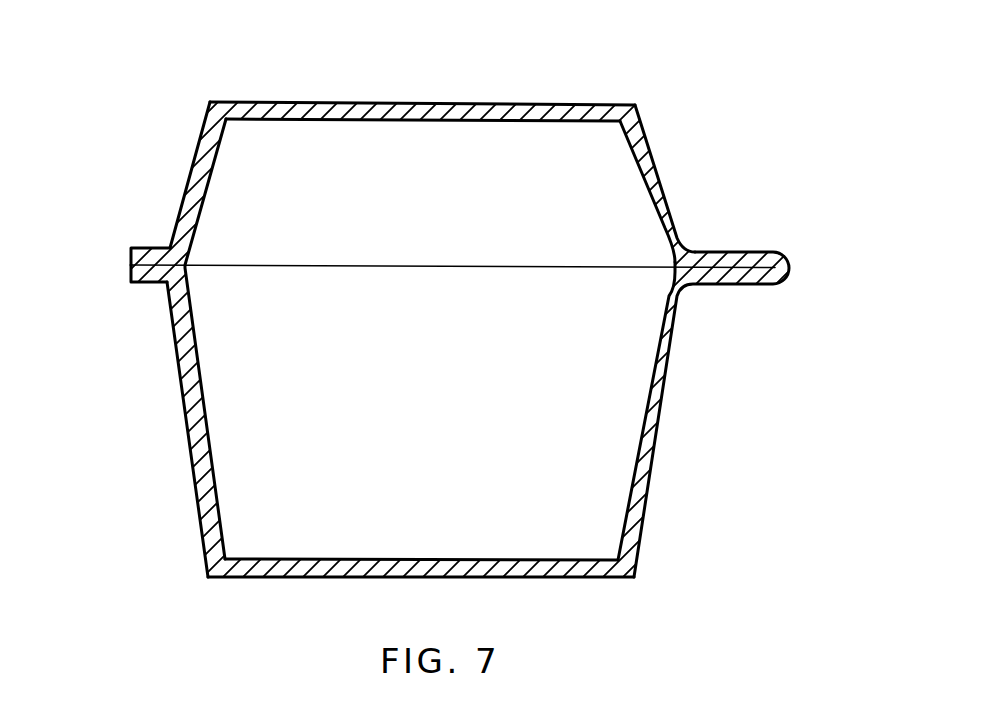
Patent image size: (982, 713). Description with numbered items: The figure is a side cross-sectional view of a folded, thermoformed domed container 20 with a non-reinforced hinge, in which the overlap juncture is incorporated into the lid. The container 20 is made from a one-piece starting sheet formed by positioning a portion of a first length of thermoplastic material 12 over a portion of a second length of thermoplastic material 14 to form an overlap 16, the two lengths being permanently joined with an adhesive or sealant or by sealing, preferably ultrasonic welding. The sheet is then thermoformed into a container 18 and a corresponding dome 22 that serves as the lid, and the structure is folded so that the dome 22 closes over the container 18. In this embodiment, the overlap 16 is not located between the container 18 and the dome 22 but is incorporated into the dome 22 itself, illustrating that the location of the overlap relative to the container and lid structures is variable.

The folded, domed container 20 is at (663, 84).
The dome 22 is at (552, 103).
The overlap 16 is at (662, 117).
The container 18 is at (590, 578).
The second length of thermoplastic material 14 is at (150, 248).
The first length of thermoplastic material 12 is at (137, 282).